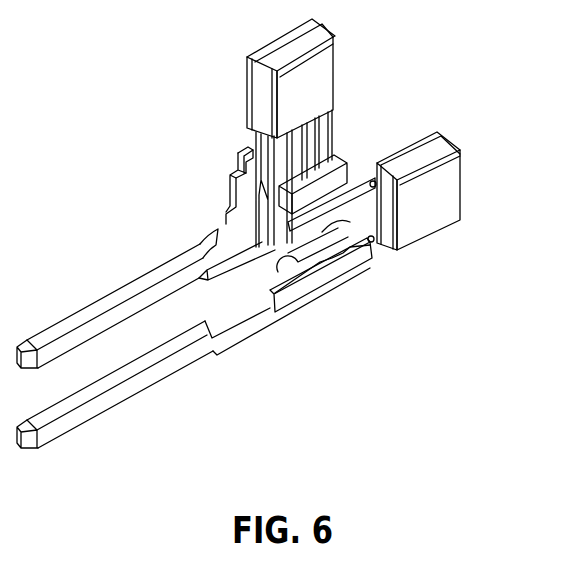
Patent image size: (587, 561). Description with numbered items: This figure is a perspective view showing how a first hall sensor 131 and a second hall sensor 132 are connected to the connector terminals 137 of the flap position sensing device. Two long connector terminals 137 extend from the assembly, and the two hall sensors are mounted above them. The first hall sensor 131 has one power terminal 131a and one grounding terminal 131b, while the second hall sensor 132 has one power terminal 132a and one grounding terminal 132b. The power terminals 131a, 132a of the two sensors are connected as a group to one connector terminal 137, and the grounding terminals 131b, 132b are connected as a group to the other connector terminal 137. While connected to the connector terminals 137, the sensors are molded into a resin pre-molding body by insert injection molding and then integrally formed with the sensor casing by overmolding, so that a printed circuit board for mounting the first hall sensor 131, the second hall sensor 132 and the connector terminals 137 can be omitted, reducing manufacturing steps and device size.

The first hall sensor 131 is at (317, 75).
The power terminal 131a is at (263, 238).
The grounding terminal 131b is at (338, 160).
The second hall sensor 132 is at (448, 190).
The power terminal 132a is at (326, 207).
The grounding terminal 132b is at (290, 296).
The connector terminals 137 is at (98, 330).